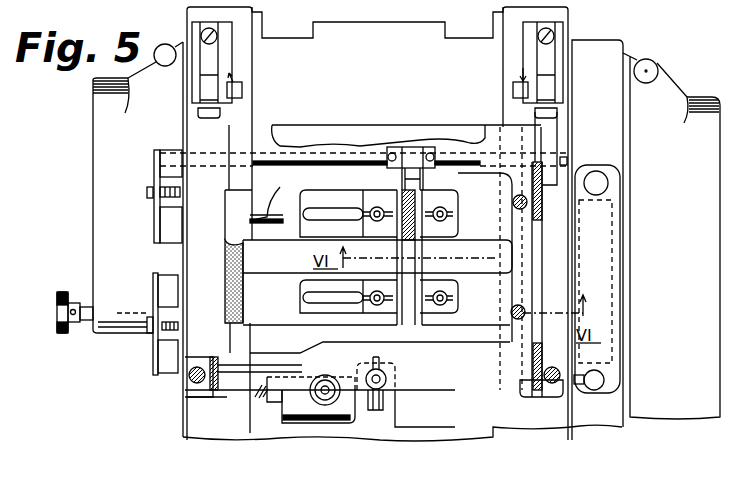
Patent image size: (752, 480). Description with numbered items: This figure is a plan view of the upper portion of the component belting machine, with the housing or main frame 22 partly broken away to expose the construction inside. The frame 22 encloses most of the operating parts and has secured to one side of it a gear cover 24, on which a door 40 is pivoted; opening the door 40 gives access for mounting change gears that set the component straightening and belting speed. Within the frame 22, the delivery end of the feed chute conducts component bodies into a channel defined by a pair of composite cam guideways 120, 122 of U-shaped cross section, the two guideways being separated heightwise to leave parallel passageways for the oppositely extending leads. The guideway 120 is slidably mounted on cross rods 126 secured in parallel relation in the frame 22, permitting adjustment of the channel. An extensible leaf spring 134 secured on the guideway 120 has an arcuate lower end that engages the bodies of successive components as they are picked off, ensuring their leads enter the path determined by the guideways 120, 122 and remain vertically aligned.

The housing or main frame 22 is at (570, 11).
The gear cover 24 is at (598, 430).
The door 40 is at (673, 70).
The composite cam guideway 120 is at (425, 179).
The composite cam guideway 122 is at (422, 333).
The cross rods 126 is at (307, 165).
The extensible leaf spring 134 is at (420, 200).